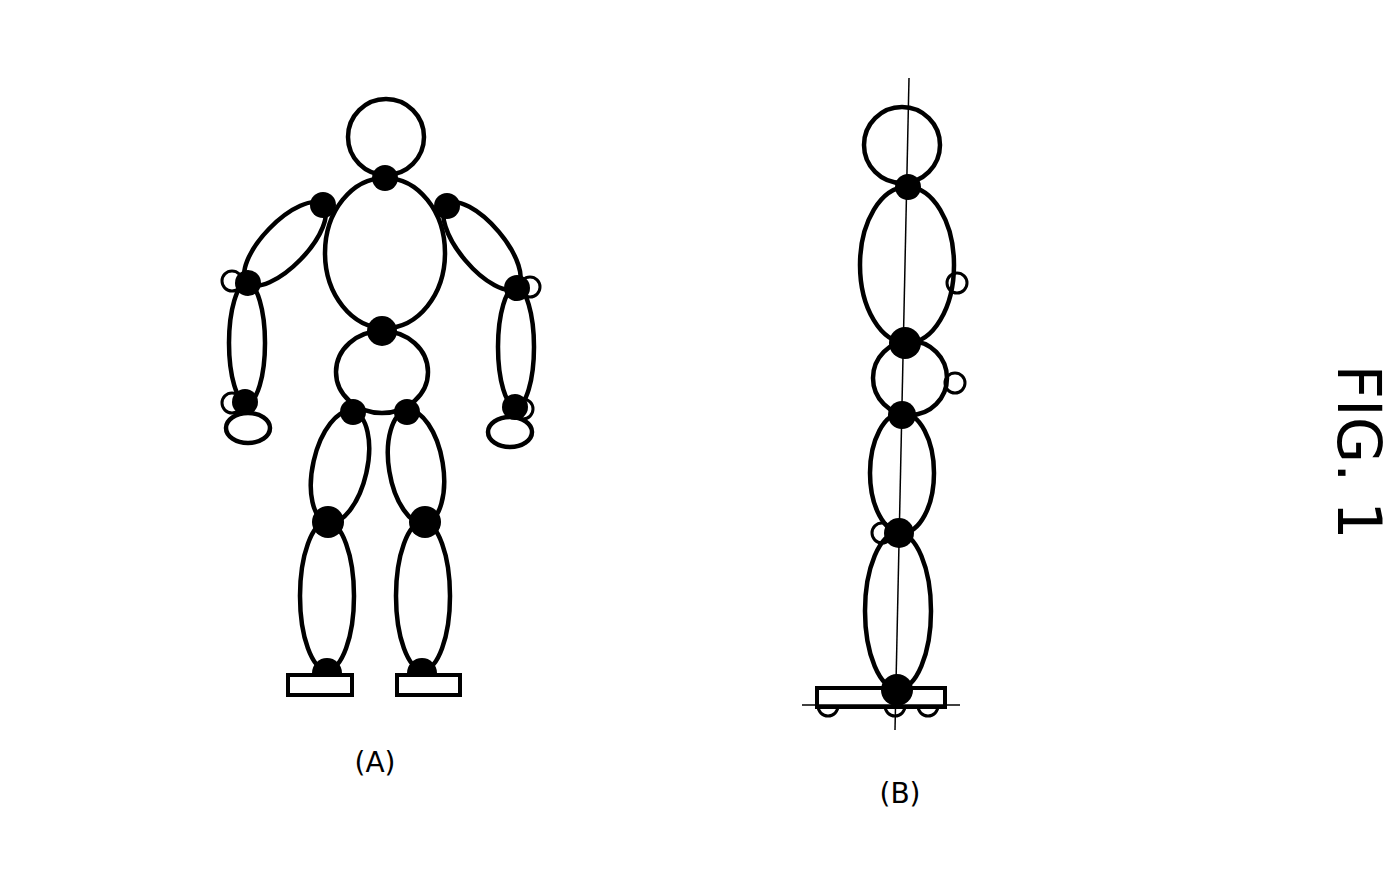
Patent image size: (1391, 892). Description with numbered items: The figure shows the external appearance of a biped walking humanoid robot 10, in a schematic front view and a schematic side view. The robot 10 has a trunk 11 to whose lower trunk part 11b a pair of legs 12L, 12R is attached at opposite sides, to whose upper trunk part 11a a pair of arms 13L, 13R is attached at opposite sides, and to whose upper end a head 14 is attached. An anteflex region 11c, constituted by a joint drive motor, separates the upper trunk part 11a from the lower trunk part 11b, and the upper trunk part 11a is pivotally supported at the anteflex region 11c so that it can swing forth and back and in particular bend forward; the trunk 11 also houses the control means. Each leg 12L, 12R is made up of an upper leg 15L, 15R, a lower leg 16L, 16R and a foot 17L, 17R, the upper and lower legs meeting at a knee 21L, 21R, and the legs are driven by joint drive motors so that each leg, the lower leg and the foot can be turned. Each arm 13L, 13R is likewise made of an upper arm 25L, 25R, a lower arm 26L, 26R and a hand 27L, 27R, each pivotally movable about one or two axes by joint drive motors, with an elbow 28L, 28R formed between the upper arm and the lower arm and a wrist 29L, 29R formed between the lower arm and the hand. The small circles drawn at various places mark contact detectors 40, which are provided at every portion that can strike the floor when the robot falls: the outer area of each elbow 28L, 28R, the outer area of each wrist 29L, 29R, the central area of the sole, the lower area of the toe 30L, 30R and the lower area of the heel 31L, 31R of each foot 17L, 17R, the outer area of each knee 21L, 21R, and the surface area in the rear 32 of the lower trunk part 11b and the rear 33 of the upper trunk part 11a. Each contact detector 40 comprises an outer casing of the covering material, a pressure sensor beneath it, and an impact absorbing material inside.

The biped walking humanoid robot 10 is at (552, 100).
The trunk 11 is at (701, 311).
The upper trunk part 11a is at (428, 287).
The lower trunk part 11b is at (430, 388).
The anteflex region 11c is at (367, 330).
The left leg 12L is at (760, 570).
The right leg 12R is at (259, 551).
The left arm 13L is at (516, 305).
The right arm 13R is at (241, 302).
The head 14 is at (397, 118).
The left upper leg 15L is at (442, 475).
The right upper leg 15R is at (327, 475).
The left lower leg 16L is at (445, 618).
The right lower leg 16R is at (317, 630).
The left foot 17L is at (746, 679).
The right foot 17R is at (281, 678).
The left knee 21L is at (450, 530).
The right knee 21R is at (305, 530).
The left upper arm 25L is at (473, 218).
The right upper arm 25R is at (290, 223).
The left lower arm 26L is at (528, 372).
The right lower arm 26R is at (240, 356).
The left hand 27L is at (528, 418).
The right hand 27R is at (230, 427).
The left elbow 28L is at (503, 293).
The right elbow 28R is at (238, 302).
The left wrist 29L is at (500, 410).
The right wrist 29R is at (258, 400).
The left toe 30L is at (833, 687).
The right toe 30R is at (327, 673).
The left heel 31L is at (945, 692).
The right heel 31R is at (320, 685).
The rear of the lower trunk part 32 is at (937, 420).
The rear of the upper trunk part 33 is at (948, 307).
The contact detector 40 is at (225, 272).